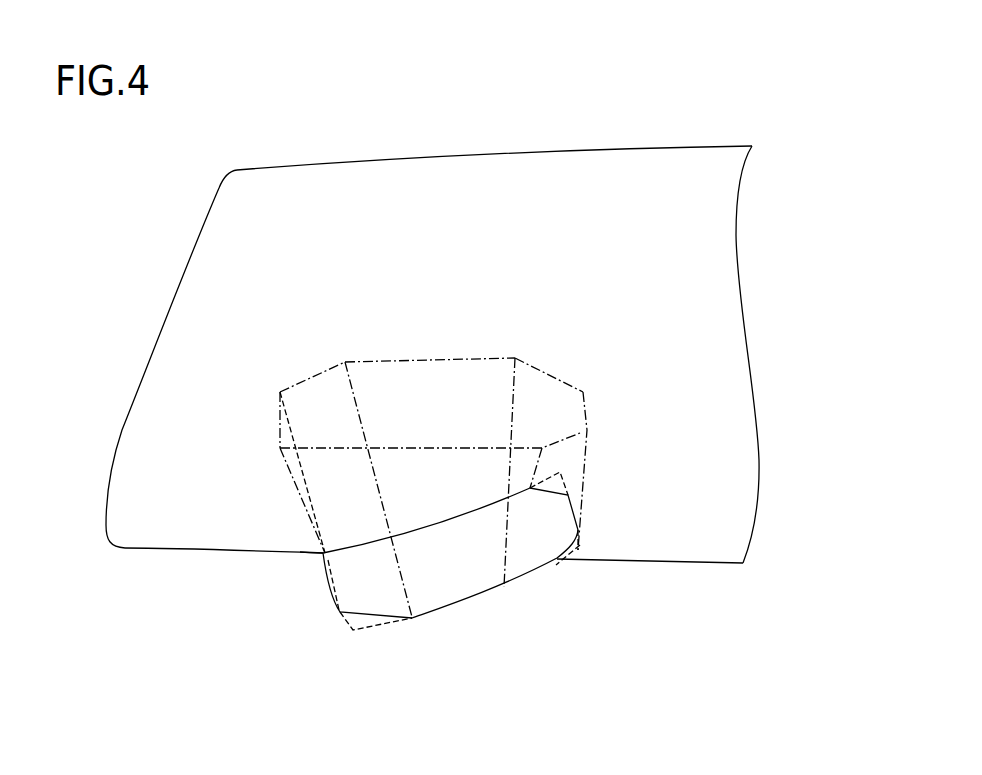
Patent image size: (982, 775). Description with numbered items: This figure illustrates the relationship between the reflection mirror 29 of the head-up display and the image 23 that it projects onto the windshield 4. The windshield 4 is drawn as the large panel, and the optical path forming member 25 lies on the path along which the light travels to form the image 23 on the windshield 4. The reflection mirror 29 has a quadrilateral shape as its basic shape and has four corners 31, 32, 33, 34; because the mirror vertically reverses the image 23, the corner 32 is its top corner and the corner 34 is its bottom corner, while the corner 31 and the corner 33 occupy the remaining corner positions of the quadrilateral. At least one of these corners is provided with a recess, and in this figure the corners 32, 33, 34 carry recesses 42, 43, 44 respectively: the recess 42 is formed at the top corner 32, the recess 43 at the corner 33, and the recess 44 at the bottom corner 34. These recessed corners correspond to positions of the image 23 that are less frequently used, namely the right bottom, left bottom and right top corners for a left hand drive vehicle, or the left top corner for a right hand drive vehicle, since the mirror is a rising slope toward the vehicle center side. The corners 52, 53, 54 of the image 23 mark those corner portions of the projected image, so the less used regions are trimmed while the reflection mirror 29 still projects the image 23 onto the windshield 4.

The windshield 4 is at (464, 157).
The image 23 is at (423, 357).
The optical path forming member 25 is at (482, 610).
The reflection mirror 29 is at (450, 595).
The corner 31 is at (295, 565).
The corner 32 is at (579, 480).
The recess 42 is at (686, 487).
The corner 33 is at (594, 554).
The recess 43 is at (625, 590).
The corner 34 is at (348, 650).
The recess 44 is at (309, 636).
The corner 52 is at (567, 440).
The corner 53 is at (553, 373).
The corner 54 is at (303, 380).